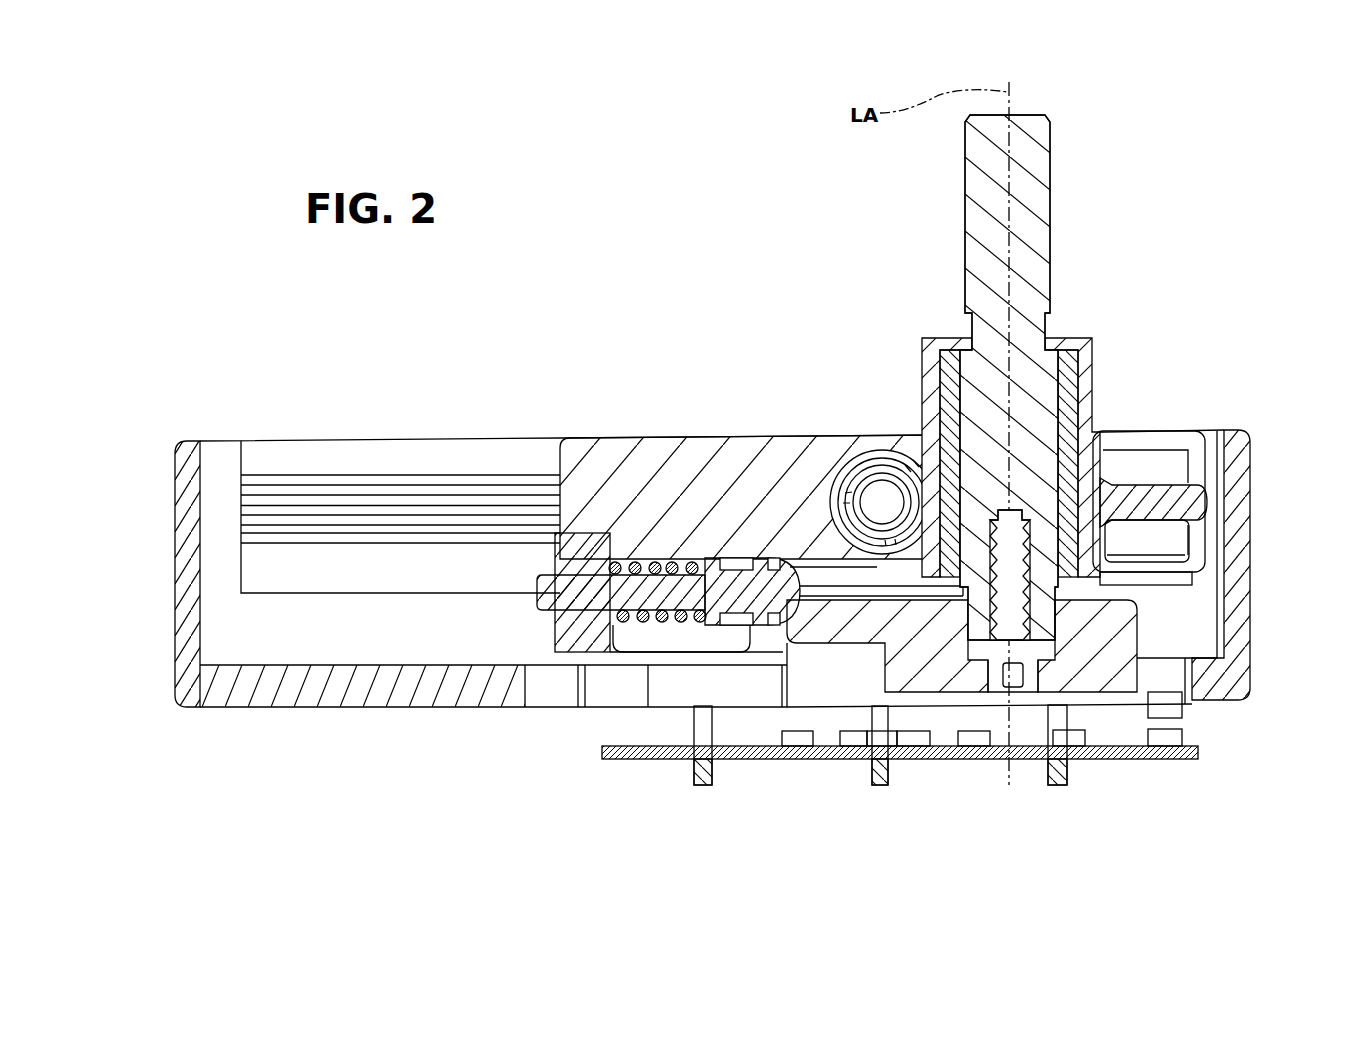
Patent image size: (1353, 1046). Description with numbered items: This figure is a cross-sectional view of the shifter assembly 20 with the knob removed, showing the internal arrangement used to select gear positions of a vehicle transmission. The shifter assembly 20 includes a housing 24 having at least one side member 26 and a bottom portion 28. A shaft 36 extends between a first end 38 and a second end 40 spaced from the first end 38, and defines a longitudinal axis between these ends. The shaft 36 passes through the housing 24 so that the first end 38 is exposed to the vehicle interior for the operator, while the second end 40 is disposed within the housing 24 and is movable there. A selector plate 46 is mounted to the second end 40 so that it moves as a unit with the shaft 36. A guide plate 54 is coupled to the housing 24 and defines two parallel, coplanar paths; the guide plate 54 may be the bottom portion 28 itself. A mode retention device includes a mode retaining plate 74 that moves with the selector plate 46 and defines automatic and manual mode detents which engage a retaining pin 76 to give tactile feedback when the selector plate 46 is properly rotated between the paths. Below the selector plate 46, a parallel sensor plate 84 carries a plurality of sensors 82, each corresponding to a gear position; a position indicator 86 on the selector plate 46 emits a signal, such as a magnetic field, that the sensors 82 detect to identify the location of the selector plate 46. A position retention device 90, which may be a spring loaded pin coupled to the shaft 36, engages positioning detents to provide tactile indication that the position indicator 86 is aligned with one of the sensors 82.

The shifter assembly 20 is at (1163, 171).
The housing 24 is at (713, 625).
The side member 26 is at (182, 568).
The bottom portion 28 is at (388, 698).
The shaft 36 is at (1052, 433).
The first end 38 is at (1070, 126).
The second end 40 is at (1068, 622).
The selector plate 46 is at (1130, 648).
The guide plate 54 is at (617, 690).
The mode retaining plate 74 is at (827, 578).
The retaining pin 76 is at (758, 585).
The sensors 82 is at (852, 740).
The sensor plate 84 is at (640, 762).
The position indicator 86 is at (1170, 708).
The position retention device 90 is at (882, 495).